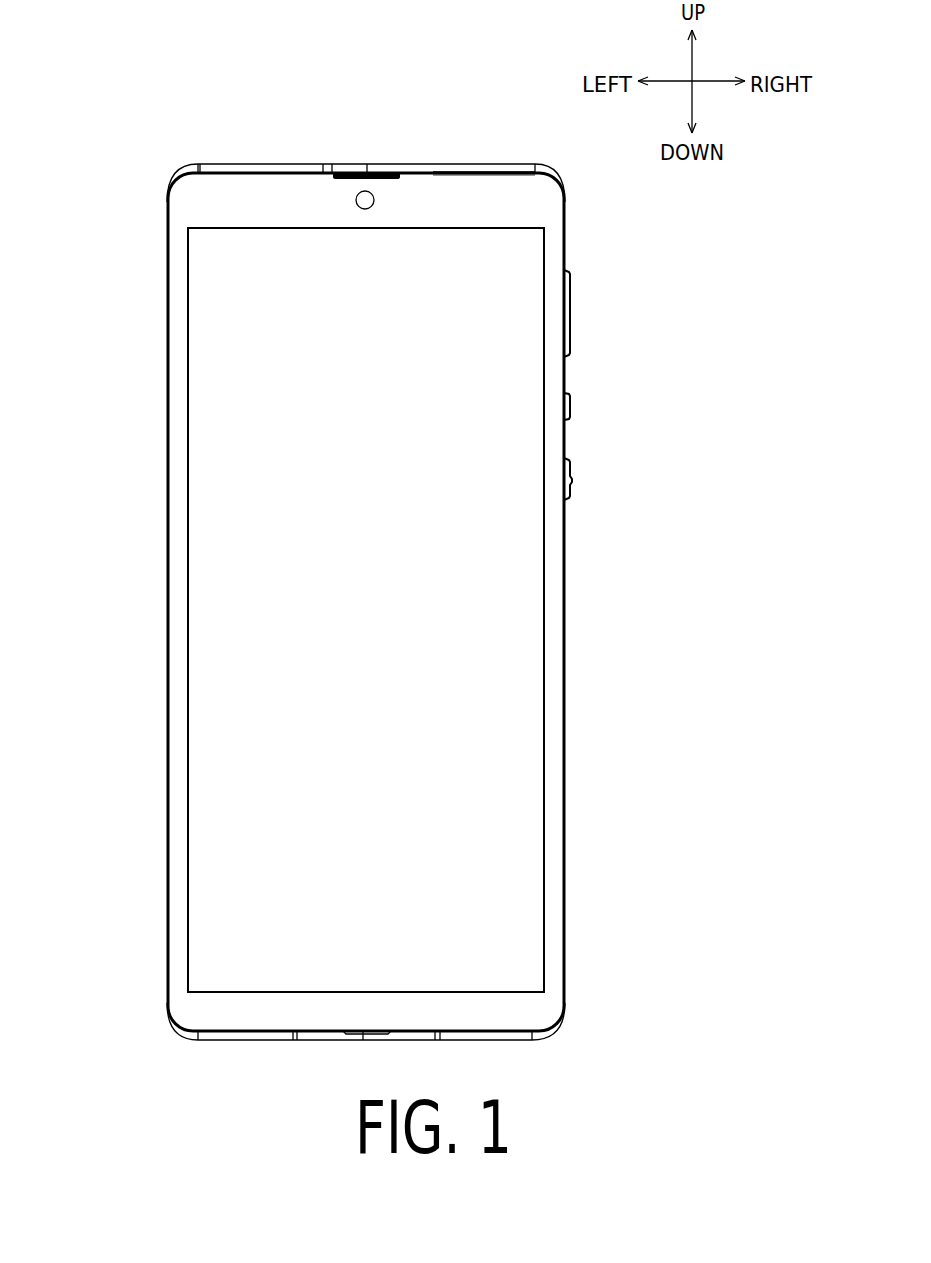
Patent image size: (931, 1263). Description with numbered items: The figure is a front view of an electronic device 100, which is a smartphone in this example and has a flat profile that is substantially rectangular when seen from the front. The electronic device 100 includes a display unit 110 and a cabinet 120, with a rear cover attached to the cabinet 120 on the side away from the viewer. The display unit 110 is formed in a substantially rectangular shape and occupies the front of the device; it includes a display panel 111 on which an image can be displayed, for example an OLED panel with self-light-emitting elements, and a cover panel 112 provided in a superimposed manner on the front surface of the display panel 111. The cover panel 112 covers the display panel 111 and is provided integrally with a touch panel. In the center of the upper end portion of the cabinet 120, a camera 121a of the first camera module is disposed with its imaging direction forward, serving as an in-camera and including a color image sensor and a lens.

The electronic device 100 is at (153, 122).
The display unit 110 is at (167, 411).
The display panel 111 is at (545, 531).
The cover panel 112 is at (566, 585).
The cabinet 120 is at (474, 154).
The camera 121a is at (384, 180).